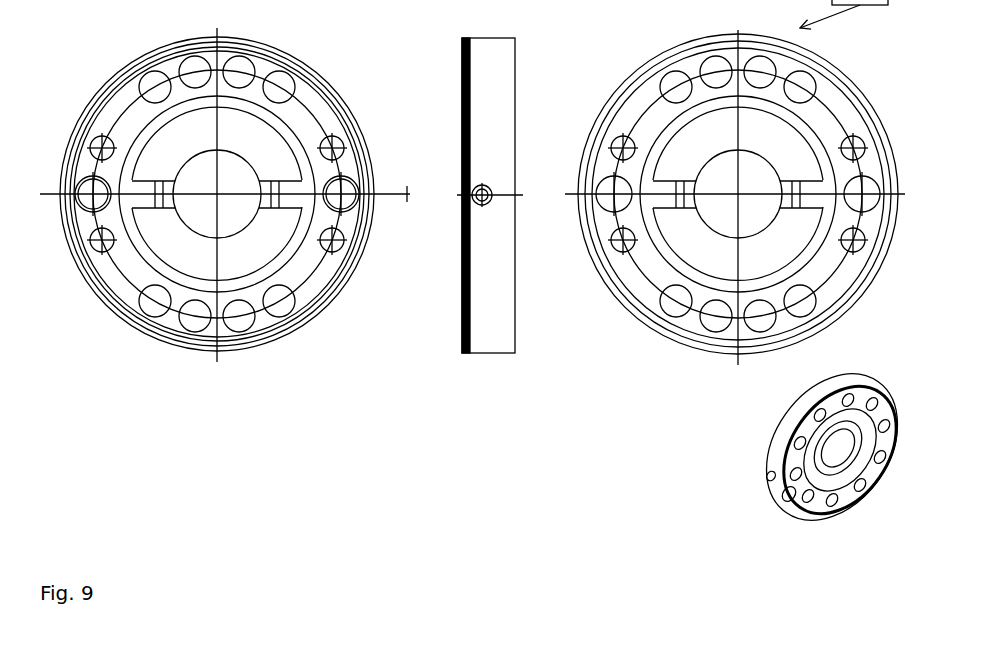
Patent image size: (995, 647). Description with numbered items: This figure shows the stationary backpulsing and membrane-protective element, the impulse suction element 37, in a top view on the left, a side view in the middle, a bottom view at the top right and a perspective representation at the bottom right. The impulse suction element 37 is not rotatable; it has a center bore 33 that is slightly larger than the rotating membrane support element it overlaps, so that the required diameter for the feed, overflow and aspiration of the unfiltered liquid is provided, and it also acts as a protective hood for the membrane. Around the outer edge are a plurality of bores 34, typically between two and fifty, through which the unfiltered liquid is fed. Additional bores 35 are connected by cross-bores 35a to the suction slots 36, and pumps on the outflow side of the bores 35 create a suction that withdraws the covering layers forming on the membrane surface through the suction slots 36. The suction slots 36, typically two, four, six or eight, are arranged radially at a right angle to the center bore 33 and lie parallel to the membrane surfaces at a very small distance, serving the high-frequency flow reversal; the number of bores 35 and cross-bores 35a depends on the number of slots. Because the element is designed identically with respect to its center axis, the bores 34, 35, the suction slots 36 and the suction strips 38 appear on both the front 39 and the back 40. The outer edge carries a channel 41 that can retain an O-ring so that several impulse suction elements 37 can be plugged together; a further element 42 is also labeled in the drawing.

The center bore 33 is at (190, 210).
The bores 34 is at (153, 93).
The additional bores 35 is at (158, 197).
The cross-bores 35a is at (757, 468).
The suction slots 36 is at (97, 195).
The impulse suction element 37 is at (105, 54).
The suction strips 38 is at (670, 207).
The front 39 is at (325, 62).
The back 40 is at (605, 77).
The channel 41 is at (780, 497).
The element 42 is at (566, 633).